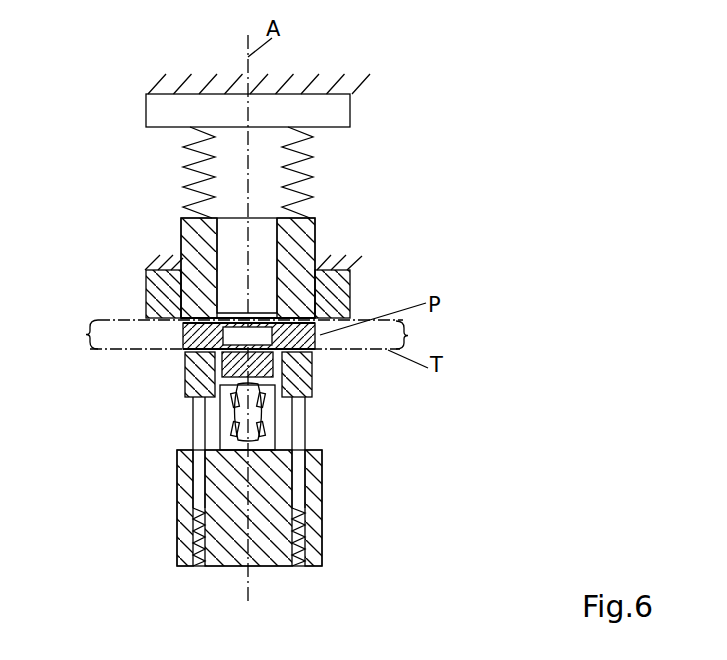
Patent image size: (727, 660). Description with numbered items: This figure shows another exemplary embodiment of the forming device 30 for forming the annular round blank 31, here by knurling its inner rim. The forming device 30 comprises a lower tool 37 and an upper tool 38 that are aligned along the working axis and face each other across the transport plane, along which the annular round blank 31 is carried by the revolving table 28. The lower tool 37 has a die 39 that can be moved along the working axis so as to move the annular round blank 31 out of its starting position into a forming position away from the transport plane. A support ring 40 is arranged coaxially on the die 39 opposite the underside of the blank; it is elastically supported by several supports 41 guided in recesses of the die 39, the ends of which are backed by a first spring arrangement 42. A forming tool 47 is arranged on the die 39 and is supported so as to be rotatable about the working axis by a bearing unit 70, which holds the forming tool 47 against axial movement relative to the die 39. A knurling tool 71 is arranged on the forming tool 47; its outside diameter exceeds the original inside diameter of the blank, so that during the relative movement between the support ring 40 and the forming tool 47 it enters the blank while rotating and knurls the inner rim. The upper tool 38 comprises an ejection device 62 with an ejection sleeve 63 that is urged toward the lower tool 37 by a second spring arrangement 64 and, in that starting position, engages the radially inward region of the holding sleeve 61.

The forming device 30 is at (395, 62).
The second spring arrangement 64 is at (318, 147).
The ejection device 62 is at (378, 160).
The upper tool 38 is at (246, 268).
The ejection sleeve 63 is at (186, 252).
The holding sleeve 61 is at (150, 288).
The annular round blank 31 is at (182, 335).
The revolving table 28 is at (86, 356).
The support ring 40 is at (185, 380).
The knurling tool 71 is at (273, 370).
The bearing unit 70 is at (230, 430).
The forming tool 47 is at (283, 418).
The support 41 is at (200, 466).
The lower tool 37 is at (372, 490).
The die 39 is at (313, 535).
The first spring arrangement 42 is at (292, 535).